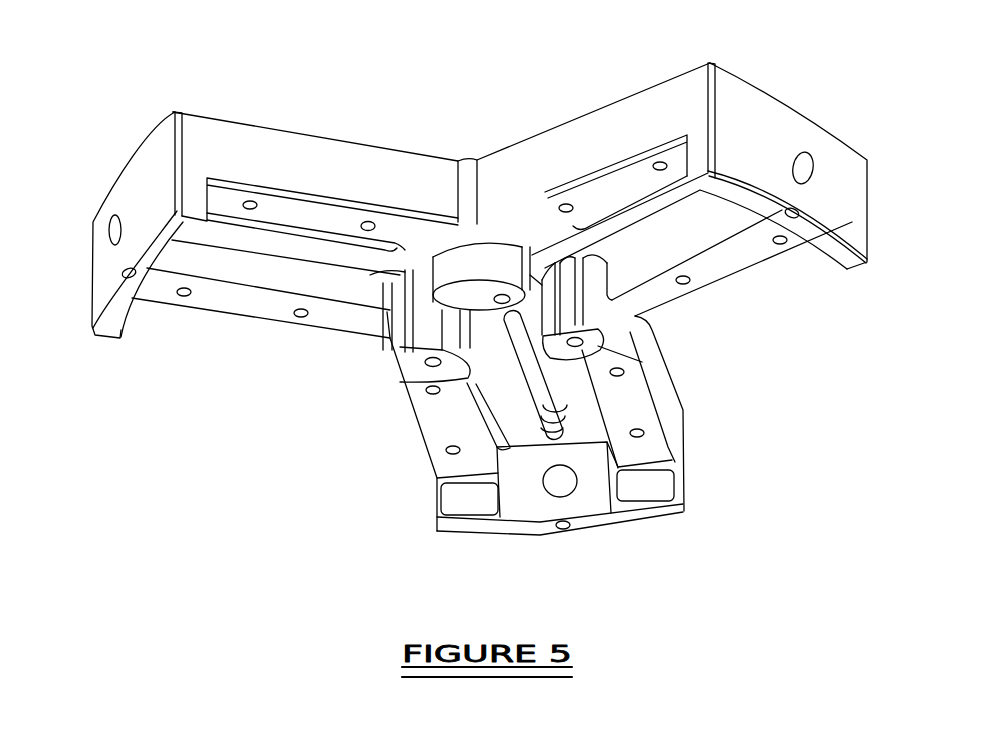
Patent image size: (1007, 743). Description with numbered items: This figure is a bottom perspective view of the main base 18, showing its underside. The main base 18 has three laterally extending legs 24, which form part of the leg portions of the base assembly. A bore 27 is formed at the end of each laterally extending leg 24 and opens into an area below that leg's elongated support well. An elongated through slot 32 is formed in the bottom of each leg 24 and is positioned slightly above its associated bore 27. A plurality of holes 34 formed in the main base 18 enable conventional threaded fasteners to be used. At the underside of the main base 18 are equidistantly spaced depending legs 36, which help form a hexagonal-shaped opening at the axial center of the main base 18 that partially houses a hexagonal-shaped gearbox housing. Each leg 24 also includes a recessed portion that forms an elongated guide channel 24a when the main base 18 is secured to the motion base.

The main base 18 is at (460, 112).
The laterally extending leg 24 is at (220, 146).
The elongated guide channel 24a is at (230, 262).
The bore 27 is at (113, 232).
The elongated through slot 32 is at (552, 432).
The holes 34 is at (368, 233).
The depending legs 36 is at (475, 260).